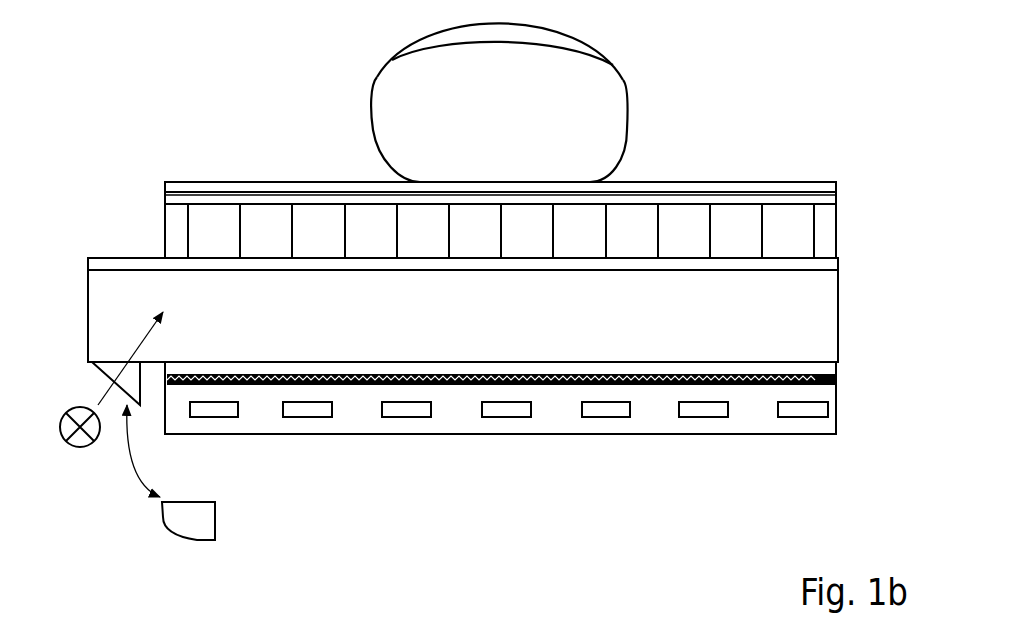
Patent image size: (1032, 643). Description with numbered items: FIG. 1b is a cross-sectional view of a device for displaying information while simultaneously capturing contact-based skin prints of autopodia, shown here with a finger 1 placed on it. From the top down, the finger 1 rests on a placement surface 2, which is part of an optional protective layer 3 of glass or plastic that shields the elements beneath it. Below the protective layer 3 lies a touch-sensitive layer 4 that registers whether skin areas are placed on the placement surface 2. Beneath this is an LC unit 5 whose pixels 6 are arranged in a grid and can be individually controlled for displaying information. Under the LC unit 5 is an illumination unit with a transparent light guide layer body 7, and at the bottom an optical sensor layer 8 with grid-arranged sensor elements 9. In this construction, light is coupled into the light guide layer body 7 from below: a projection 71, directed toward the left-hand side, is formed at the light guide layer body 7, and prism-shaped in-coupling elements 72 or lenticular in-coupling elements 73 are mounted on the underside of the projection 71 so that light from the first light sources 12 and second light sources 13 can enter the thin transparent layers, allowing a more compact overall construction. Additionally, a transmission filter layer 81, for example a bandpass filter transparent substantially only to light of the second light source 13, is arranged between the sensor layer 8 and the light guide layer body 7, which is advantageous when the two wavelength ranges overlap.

The finger 1 is at (612, 112).
The placement surface 2 is at (213, 182).
The protective layer 3 is at (837, 184).
The touch-sensitive layer 4 is at (837, 197).
The LC unit 5 is at (157, 207).
The pixels 6 is at (263, 225).
The light guide layer body 7 is at (842, 258).
The projection 71 is at (87, 290).
The prism-shaped in-coupling element 72 is at (110, 370).
The lenticular in-coupling element 73 is at (205, 520).
The first light source 12 is at (72, 470).
The second light source 13 is at (80, 442).
The optical sensor layer 8 is at (842, 388).
The transmission filter layer 81 is at (447, 384).
The sensor elements 9 is at (605, 411).